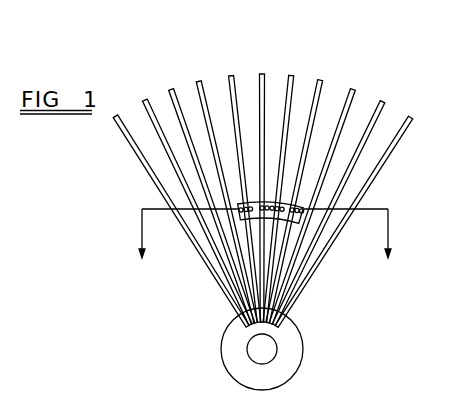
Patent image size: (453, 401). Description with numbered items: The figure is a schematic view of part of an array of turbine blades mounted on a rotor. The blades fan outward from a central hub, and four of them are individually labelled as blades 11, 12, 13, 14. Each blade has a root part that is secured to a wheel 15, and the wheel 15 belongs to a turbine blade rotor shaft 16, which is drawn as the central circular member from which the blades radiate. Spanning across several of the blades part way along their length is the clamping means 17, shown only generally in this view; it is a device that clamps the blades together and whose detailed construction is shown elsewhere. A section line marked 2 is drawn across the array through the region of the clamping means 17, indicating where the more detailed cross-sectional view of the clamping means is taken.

The section line 2- 2 is at (266, 245).
The blade 11 is at (232, 73).
The blade 12 is at (263, 73).
The blade 13 is at (291, 75).
The blade 14 is at (320, 79).
The wheel 15 is at (290, 335).
The turbine blade rotor shaft 16 is at (268, 357).
The clamping means 17 is at (292, 206).